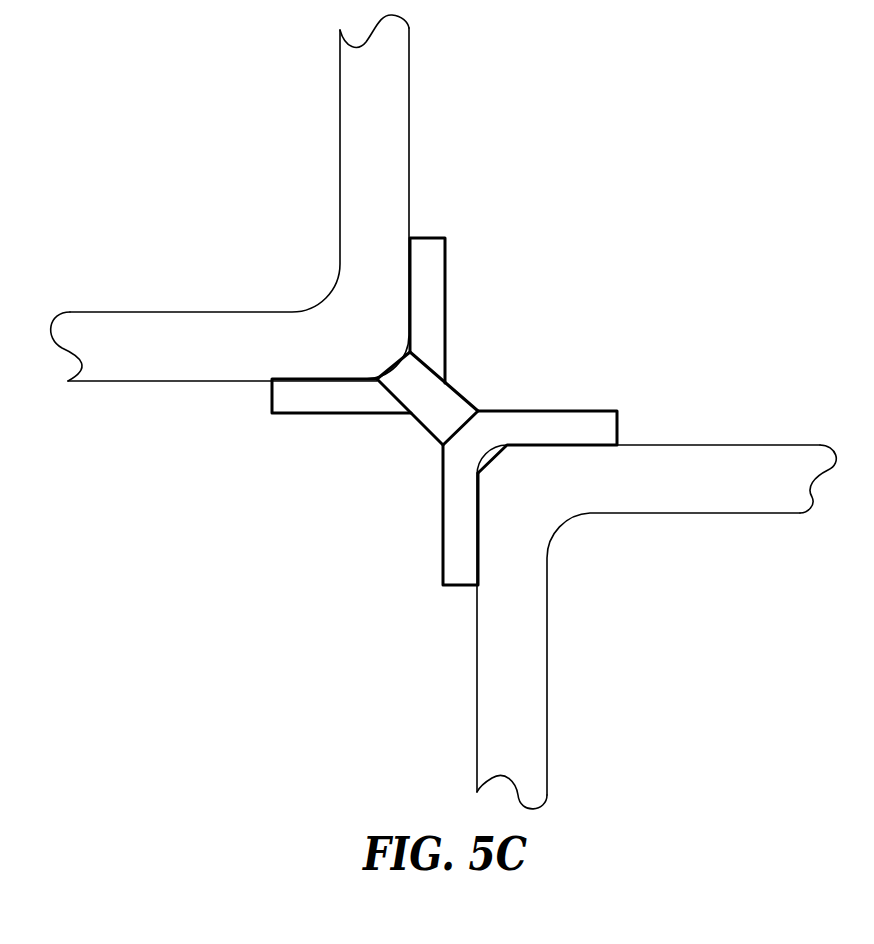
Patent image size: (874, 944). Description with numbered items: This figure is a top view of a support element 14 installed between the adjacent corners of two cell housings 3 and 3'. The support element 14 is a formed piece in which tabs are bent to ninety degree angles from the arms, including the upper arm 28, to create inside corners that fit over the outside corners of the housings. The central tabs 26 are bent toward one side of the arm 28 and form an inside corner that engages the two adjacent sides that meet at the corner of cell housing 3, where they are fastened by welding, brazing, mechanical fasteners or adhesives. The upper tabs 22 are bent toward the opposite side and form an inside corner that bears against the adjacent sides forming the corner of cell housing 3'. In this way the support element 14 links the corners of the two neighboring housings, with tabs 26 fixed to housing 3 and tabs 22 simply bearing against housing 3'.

The cell housing 3 is at (269, 198).
The cell housing 3' is at (656, 589).
The support element 14 is at (618, 238).
The upper tab 22 is at (548, 420).
The central tab 26 is at (430, 258).
The upper arm 28 is at (445, 397).